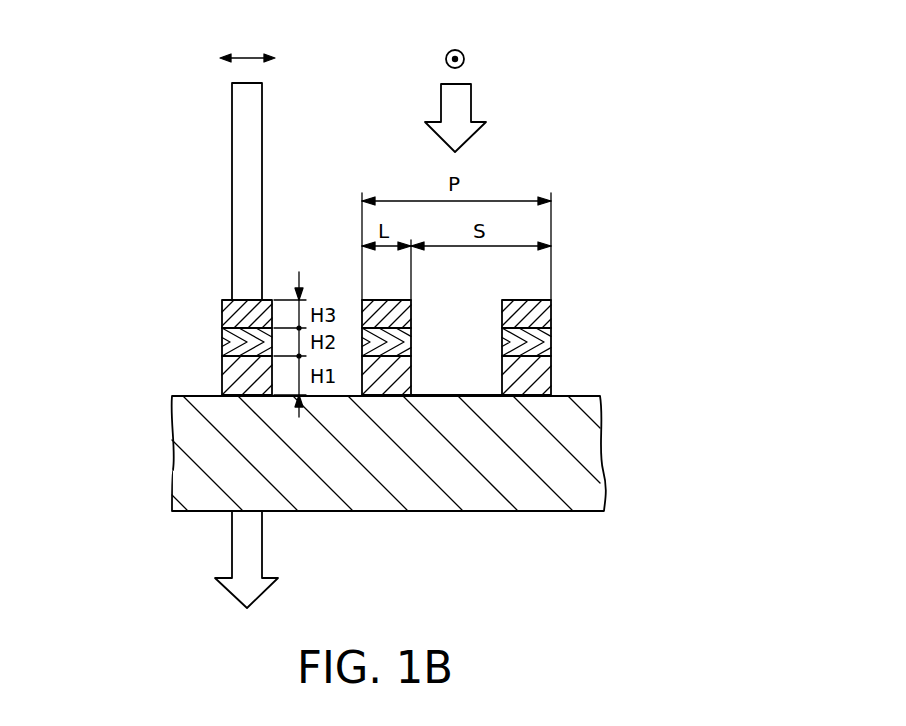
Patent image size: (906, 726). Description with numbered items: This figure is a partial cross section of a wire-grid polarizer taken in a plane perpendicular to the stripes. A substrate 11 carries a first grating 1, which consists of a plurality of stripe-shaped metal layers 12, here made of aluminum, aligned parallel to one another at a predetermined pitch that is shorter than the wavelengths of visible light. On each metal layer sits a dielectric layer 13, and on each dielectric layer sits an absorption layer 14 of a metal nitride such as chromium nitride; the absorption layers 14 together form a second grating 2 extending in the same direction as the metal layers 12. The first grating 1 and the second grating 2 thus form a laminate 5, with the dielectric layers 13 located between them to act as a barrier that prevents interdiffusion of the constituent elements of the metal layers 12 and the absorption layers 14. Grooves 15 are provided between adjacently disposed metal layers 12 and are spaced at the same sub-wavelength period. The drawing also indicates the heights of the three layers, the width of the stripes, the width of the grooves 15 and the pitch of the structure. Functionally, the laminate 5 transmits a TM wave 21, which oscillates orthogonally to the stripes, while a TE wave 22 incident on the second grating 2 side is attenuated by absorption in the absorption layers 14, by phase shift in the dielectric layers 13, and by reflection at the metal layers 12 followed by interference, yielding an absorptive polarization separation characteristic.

The first grating 1 is at (206, 372).
The second grating 2 is at (211, 328).
The laminate 5 is at (191, 347).
The substrate 11 is at (590, 446).
The metal layers 12 is at (540, 373).
The dielectric layers 13 is at (542, 345).
The absorption layers 14 is at (542, 309).
The grooves 15 is at (458, 388).
The TM wave 21 is at (262, 98).
The TE wave 22 is at (471, 100).